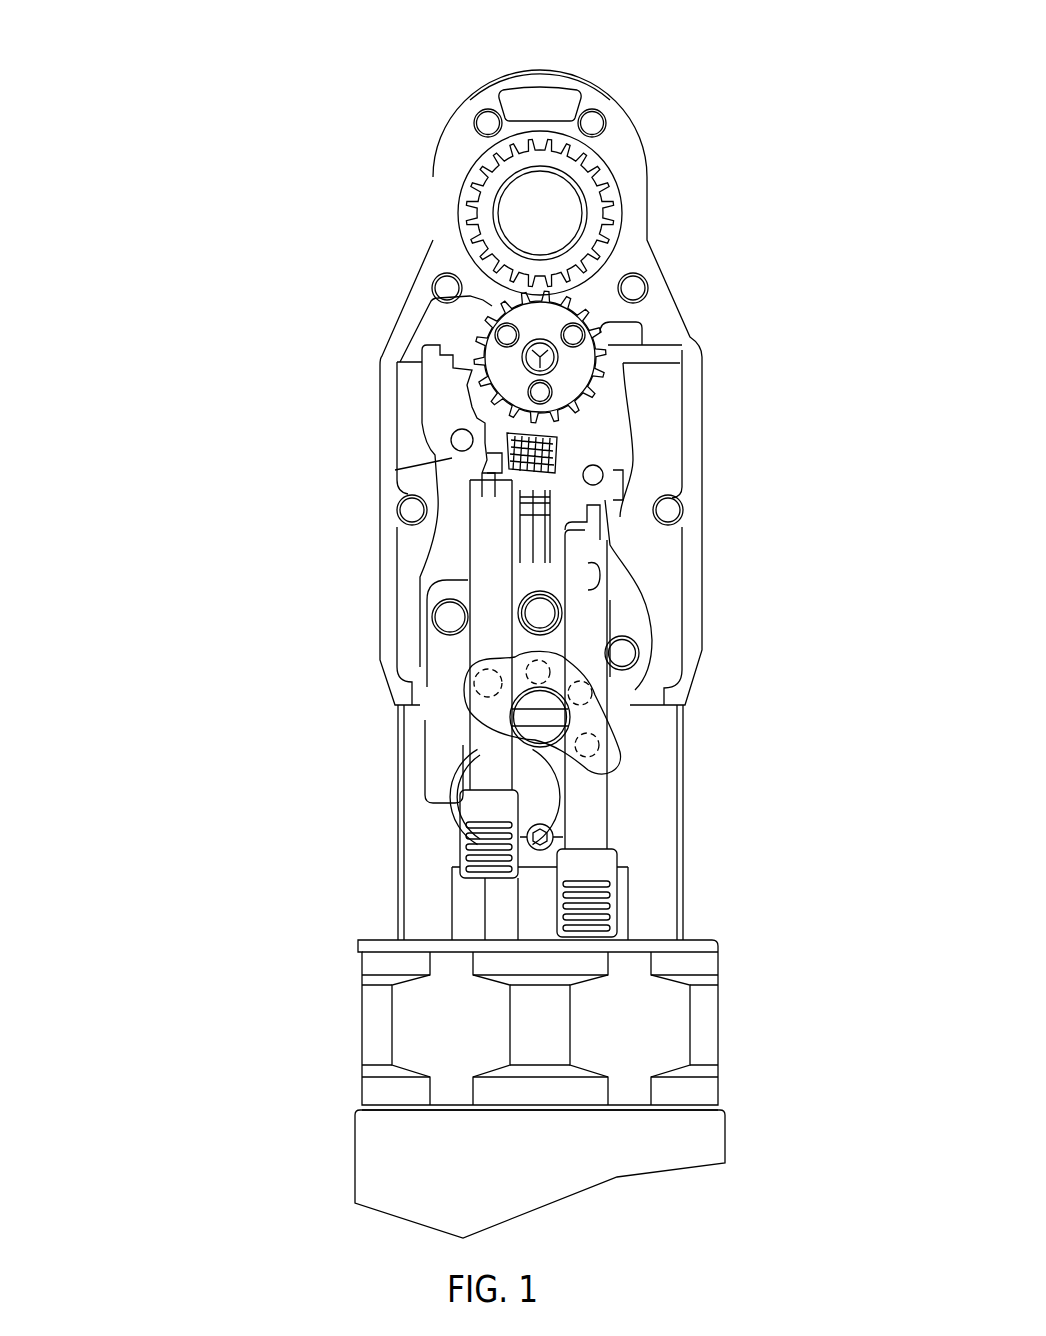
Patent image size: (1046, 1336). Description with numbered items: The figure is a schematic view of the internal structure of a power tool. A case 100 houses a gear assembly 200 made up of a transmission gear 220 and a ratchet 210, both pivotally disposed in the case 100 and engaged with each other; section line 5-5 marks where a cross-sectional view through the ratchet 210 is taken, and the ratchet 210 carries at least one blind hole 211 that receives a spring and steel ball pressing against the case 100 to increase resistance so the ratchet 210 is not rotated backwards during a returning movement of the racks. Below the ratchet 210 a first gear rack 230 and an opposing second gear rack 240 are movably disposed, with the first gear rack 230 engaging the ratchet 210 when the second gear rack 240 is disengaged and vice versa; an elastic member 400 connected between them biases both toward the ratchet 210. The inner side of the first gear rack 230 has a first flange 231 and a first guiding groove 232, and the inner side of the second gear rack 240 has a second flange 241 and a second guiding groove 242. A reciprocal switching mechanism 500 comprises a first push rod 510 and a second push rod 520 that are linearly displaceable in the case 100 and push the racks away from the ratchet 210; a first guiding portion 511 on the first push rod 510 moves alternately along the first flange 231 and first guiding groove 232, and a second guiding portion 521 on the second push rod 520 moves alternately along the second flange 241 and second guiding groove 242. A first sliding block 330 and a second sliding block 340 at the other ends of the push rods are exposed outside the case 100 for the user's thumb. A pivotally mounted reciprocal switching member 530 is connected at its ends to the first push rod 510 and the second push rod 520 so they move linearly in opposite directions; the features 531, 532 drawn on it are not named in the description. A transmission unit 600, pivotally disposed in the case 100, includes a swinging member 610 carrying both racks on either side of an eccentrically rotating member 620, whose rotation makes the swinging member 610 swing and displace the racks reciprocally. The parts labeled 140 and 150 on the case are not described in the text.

The case 100 is at (608, 92).
The housing top portion 140 is at (540, 71).
The base 150 is at (540, 940).
The section line 5- 5 is at (490, 325).
The gear assembly 200 is at (270, 263).
The ratchet 210 is at (497, 358).
The blind hole 211 is at (600, 344).
The transmission gear 220 is at (483, 232).
The first gear rack 230 is at (440, 383).
The first flange 231 is at (482, 451).
The first guiding groove 232 is at (492, 488).
The second gear rack 240 is at (613, 447).
The second flange 241 is at (623, 490).
The second guiding groove 242 is at (582, 532).
The elastic member 400 is at (550, 440).
The reciprocal switching mechanism 500 is at (175, 505).
The first push rod 510 is at (498, 552).
The first guiding portion 511 is at (497, 513).
The second push rod 520 is at (577, 570).
The second guiding portion 521 is at (570, 515).
The reciprocal switching member 530 is at (608, 755).
The first cam hole 531 is at (572, 660).
The second cam hole 532 is at (567, 688).
The transmission unit 600 is at (200, 700).
The swinging member 610 is at (433, 670).
The eccentrically rotating member 620 is at (460, 778).
The first sliding block 330 is at (483, 812).
The second sliding block 340 is at (608, 875).